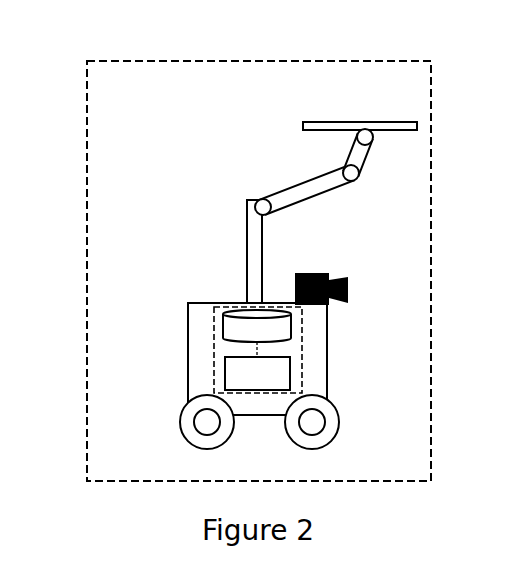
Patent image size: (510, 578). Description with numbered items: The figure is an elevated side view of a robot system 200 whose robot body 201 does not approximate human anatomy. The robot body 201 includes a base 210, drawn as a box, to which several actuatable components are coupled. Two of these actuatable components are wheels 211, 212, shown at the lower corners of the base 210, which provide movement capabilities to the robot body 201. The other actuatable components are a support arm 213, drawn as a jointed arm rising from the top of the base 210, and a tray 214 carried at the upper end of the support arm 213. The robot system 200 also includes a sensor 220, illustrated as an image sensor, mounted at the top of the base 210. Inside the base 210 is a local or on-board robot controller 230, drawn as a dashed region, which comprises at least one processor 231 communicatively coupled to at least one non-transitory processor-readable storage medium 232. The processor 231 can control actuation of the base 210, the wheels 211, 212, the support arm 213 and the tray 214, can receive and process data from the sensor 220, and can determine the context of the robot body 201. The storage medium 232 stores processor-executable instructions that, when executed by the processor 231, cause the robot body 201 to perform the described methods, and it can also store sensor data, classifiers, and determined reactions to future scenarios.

The robot system 200 is at (69, 76).
The robot body 201 is at (259, 271).
The base 210 is at (208, 302).
The wheel 211 is at (181, 413).
The wheel 212 is at (340, 412).
The support arm 213 is at (307, 198).
The tray 214 is at (312, 126).
The sensor 220 is at (331, 276).
The robot controller 230 is at (213, 355).
The processor 231 is at (257, 373).
The non-transitory processor-readable storage medium 232 is at (257, 326).